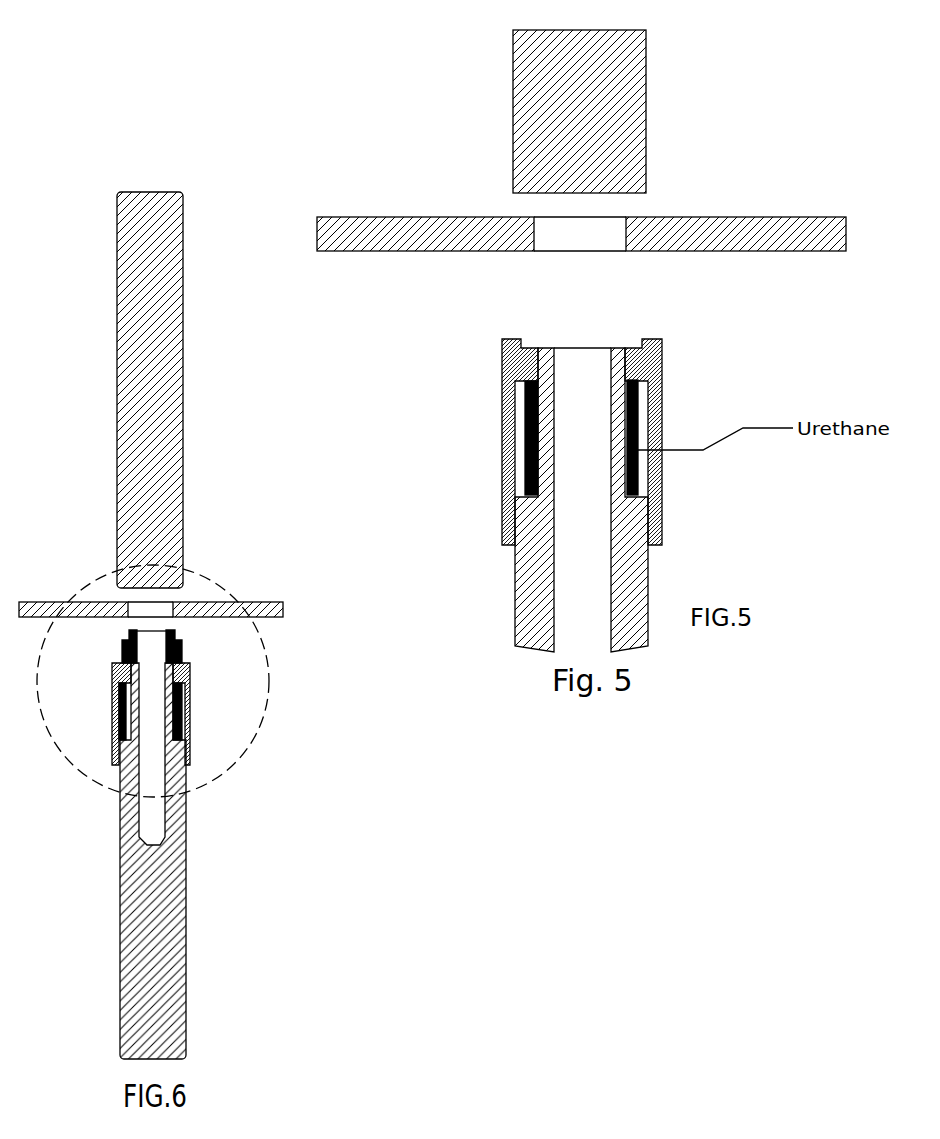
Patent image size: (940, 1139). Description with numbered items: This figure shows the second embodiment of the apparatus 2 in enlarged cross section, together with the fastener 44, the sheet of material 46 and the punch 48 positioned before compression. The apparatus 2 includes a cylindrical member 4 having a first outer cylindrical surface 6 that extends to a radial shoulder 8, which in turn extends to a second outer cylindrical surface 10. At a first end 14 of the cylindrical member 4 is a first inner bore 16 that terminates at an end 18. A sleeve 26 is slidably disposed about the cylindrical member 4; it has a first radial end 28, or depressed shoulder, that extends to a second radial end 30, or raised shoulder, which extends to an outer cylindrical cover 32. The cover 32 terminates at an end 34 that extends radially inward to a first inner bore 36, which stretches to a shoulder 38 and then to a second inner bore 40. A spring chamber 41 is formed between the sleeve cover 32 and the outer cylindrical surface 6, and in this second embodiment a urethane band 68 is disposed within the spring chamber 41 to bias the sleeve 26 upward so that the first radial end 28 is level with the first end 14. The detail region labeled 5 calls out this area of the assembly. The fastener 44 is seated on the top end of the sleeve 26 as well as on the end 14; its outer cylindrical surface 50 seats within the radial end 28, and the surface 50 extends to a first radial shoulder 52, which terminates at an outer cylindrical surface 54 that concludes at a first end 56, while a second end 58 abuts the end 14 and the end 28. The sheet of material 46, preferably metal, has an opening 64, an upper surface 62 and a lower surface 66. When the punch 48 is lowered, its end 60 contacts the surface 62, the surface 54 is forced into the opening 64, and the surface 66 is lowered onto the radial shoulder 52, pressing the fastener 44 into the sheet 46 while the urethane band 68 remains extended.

In FIG. 5, the apparatus 2 is at (477, 305).
In FIG. 5, the cylindrical member 4 is at (535, 577).
In FIG. 6, the cylindrical member 4 is at (120, 935).
In FIG. 6, the detail circle 5 is at (105, 572).
In FIG. 5, the first outer cylindrical surface 6 is at (540, 432).
In FIG. 5, the radial shoulder 8 is at (516, 507).
In FIG. 5, the second outer cylindrical surface 10 is at (515, 617).
In FIG. 5, the first end 14 is at (507, 373).
In FIG. 6, the first end 14 is at (116, 722).
In FIG. 5, the first inner bore 16 is at (555, 623).
In FIG. 6, the first inner bore 16 is at (162, 837).
In FIG. 6, the end 18 is at (138, 810).
In FIG. 5, the sleeve 26 is at (503, 403).
In FIG. 6, the sleeve 26 is at (193, 715).
In FIG. 5, the first radial end 28 is at (633, 348).
In FIG. 6, the first radial end 28 is at (190, 693).
In FIG. 5, the second radial end 30 is at (650, 339).
In FIG. 6, the second radial end 30 is at (182, 652).
In FIG. 5, the outer cylindrical cover 32 is at (662, 503).
In FIG. 6, the outer cylindrical cover 32 is at (192, 742).
In FIG. 5, the end 34 is at (653, 545).
In FIG. 6, the end 34 is at (190, 765).
In FIG. 5, the first inner bore 36 is at (650, 483).
In FIG. 6, the first inner bore 36 is at (192, 733).
In FIG. 5, the shoulder 38 is at (657, 367).
In FIG. 6, the shoulder 38 is at (192, 705).
In FIG. 5, the second inner bore 40 is at (503, 390).
In FIG. 5, the spring chamber 41 is at (640, 427).
In FIG. 6, the spring chamber 41 is at (121, 745).
In FIG. 6, the fastener 44 is at (182, 645).
In FIG. 5, the sheet of material 46 is at (342, 217).
In FIG. 6, the sheet of material 46 is at (23, 602).
In FIG. 5, the punch 48 is at (513, 90).
In FIG. 6, the punch 48 is at (185, 542).
In FIG. 6, the outer cylindrical surface 50 is at (113, 683).
In FIG. 6, the first radial shoulder 52 is at (105, 622).
In FIG. 6, the outer cylindrical surface 54 is at (125, 637).
In FIG. 6, the first end 56 is at (133, 630).
In FIG. 6, the second end 58 is at (123, 705).
In FIG. 6, the end 60 is at (130, 608).
In FIG. 5, the surface 62 is at (772, 217).
In FIG. 6, the surface 62 is at (243, 602).
In FIG. 6, the opening 64 is at (163, 588).
In FIG. 6, the surface 66 is at (205, 618).
In FIG. 5, the urethane band 68 is at (527, 442).